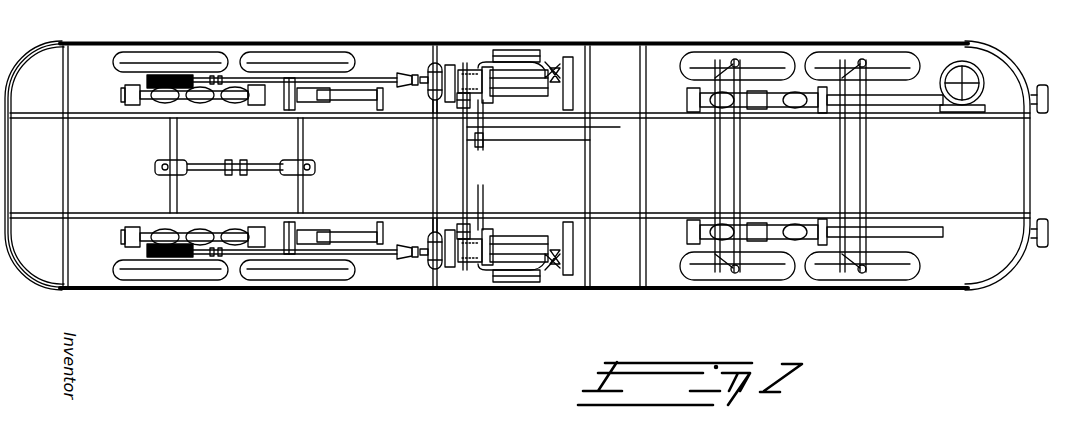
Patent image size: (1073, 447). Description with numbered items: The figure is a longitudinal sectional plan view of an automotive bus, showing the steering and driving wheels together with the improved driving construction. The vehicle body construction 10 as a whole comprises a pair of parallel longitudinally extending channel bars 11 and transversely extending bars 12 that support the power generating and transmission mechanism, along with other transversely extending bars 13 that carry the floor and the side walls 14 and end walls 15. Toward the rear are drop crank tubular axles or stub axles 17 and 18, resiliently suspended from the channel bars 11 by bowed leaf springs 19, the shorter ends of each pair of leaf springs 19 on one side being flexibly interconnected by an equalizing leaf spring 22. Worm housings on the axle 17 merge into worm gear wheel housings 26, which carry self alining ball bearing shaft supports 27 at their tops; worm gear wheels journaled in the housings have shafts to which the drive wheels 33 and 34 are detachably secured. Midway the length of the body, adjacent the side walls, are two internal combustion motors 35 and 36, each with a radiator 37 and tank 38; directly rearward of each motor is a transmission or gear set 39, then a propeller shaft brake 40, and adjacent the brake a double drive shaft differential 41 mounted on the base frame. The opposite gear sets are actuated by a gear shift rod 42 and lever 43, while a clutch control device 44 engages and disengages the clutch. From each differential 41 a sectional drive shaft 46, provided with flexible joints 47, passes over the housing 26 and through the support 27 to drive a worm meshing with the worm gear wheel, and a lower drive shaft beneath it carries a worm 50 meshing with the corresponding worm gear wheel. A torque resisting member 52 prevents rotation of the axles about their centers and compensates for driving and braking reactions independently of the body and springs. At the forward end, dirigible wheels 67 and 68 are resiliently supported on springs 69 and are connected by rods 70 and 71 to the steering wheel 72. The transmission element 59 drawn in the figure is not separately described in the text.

The vehicle body construction 10 is at (688, 42).
The channel bars 11 is at (663, 212).
The transversely extending bars 12 is at (470, 182).
The transversely extending bars 13 is at (68, 243).
The side walls 14 is at (618, 42).
The end walls 15 is at (8, 146).
The drop crank tubular axle 17 is at (305, 152).
The drop crank tubular axle 18 is at (178, 135).
The bowed leaf spring 19 is at (357, 96).
The equalizing leaf spring 22 is at (130, 88).
The worm gear wheel housings 26 is at (262, 100).
The self alining ball bearing shaft supports 27 is at (297, 75).
The drive wheel 33 is at (328, 62).
The drive wheel 34 is at (200, 56).
The motor 35 is at (522, 248).
The motor 36 is at (535, 80).
The radiator 37 is at (566, 82).
The tank 38 is at (520, 66).
The transmission or gear set 39 is at (463, 166).
The propeller shaft brake 40 is at (432, 102).
The double drive shaft differential 41 is at (213, 236).
The gear shift rod 42 is at (463, 183).
The lever 43 is at (618, 128).
The clutch control device 44 is at (483, 190).
The sectional drive shaft 46 is at (380, 108).
The flexible joints 47 is at (396, 79).
The worm 50 is at (178, 76).
The torque resisting member 52 is at (180, 190).
The transmission 59 is at (470, 62).
The dirigible wheel 67 is at (752, 58).
The dirigible wheel 68 is at (850, 56).
The springs 69 is at (812, 106).
The rod 70 is at (722, 185).
The rod 71 is at (842, 182).
The steering wheel 72 is at (962, 112).